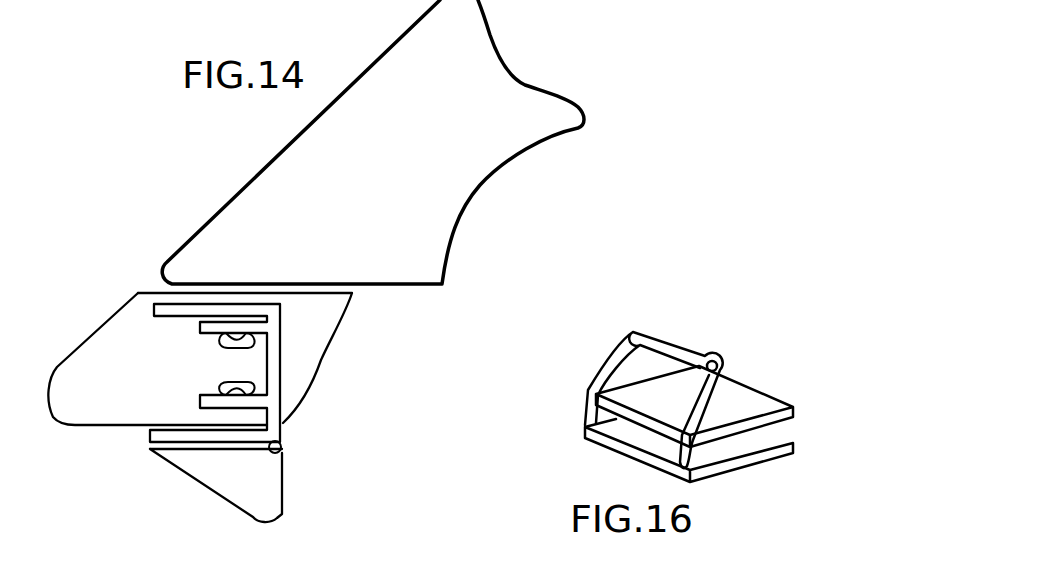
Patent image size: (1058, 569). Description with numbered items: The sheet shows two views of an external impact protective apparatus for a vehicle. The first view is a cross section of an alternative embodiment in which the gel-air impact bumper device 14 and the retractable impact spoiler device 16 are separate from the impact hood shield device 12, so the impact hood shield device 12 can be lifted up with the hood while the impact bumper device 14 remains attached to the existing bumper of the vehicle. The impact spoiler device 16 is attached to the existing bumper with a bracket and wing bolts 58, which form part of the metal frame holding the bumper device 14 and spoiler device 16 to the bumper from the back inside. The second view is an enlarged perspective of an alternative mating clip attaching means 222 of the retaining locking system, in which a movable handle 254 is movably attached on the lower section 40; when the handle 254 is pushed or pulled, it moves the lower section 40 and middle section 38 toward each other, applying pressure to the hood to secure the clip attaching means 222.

In FIG. 14, the impact hood shield device 12 is at (478, 50).
In FIG. 14, the gel-air impact bumper device 14 is at (92, 352).
In FIG. 14, the retractable impact spoiler device 16 is at (262, 500).
In FIG. 14, the wing bolts 58 is at (250, 385).
In FIG. 16, the mating clip attaching means 222 is at (725, 319).
In FIG. 16, the movable handle 254 is at (662, 343).
In FIG. 16, the lower section 40 is at (762, 402).
In FIG. 16, the middle section 38 is at (768, 442).